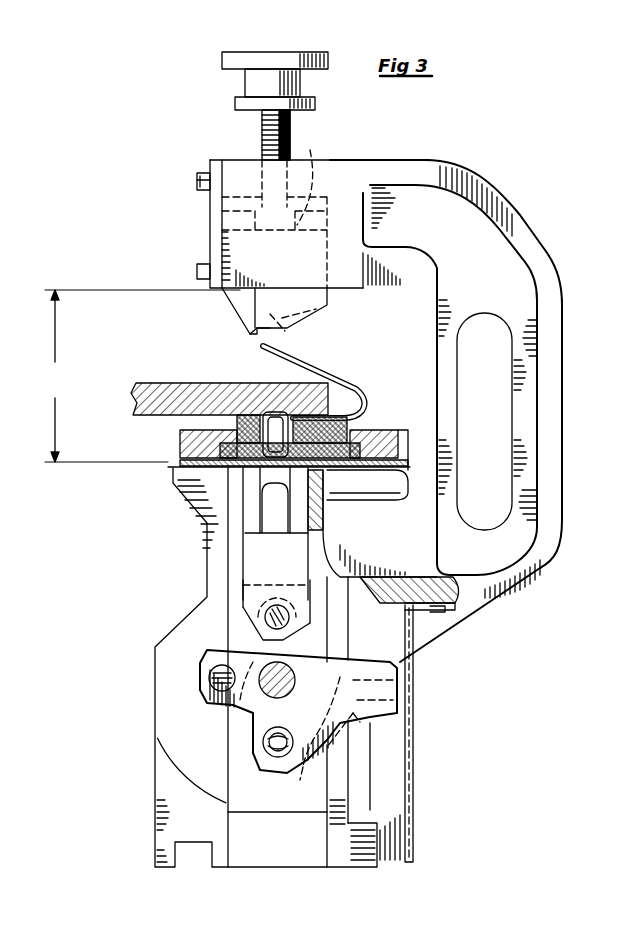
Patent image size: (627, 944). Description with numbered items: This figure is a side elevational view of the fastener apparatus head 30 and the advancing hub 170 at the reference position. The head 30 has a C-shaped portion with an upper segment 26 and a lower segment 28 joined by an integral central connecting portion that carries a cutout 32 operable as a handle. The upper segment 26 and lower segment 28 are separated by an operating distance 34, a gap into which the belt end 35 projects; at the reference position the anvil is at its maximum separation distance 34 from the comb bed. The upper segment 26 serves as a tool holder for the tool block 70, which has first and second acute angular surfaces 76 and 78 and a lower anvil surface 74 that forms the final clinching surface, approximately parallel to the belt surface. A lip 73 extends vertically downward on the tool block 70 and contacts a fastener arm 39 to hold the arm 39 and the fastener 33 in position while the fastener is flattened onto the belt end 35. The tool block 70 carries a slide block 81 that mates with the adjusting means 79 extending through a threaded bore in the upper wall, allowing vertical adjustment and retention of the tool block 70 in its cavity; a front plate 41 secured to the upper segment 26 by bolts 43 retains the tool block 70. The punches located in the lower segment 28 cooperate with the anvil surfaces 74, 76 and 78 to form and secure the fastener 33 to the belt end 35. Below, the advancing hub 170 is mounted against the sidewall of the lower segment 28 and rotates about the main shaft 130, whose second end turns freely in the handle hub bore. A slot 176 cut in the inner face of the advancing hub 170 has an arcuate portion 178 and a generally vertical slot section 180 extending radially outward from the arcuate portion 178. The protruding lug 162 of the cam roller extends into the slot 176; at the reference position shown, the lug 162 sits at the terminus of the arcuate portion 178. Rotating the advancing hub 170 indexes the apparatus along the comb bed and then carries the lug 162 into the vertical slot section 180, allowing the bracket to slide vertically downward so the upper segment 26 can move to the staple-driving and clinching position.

The upper segment 26 is at (408, 160).
The lower segment 28 is at (447, 633).
The head 30 is at (565, 318).
The cutout 32 is at (497, 404).
The fastener 33 is at (368, 385).
The operating distance 34 is at (140, 376).
The belt end 35 is at (140, 418).
The fastener arm 39 is at (292, 358).
The front plate 41 is at (218, 160).
The bolts 43 is at (196, 181).
The tool block 70 is at (214, 291).
The lip 73 is at (245, 332).
The lower anvil surface 74 is at (266, 334).
The first acute angular surface 76 is at (286, 334).
The second acute angular surface 78 is at (324, 318).
The adjusting means 79 is at (292, 128).
The slide block 81 is at (317, 180).
The main shaft 130 is at (290, 670).
The lug 162 is at (262, 748).
The advancing hub 170 is at (356, 658).
The slot 176 is at (370, 724).
The arcuate portion 178 is at (313, 766).
The vertical slot section 180 is at (412, 686).